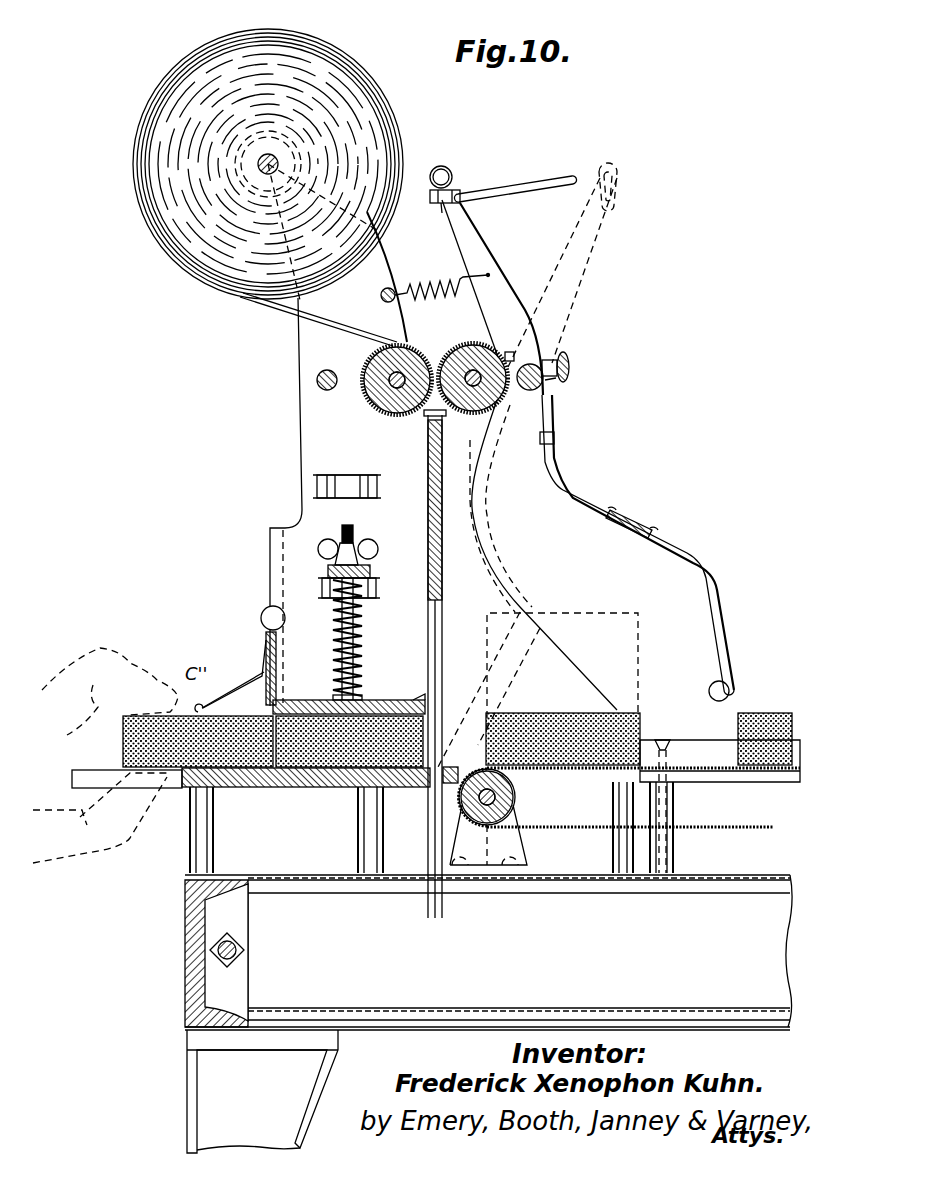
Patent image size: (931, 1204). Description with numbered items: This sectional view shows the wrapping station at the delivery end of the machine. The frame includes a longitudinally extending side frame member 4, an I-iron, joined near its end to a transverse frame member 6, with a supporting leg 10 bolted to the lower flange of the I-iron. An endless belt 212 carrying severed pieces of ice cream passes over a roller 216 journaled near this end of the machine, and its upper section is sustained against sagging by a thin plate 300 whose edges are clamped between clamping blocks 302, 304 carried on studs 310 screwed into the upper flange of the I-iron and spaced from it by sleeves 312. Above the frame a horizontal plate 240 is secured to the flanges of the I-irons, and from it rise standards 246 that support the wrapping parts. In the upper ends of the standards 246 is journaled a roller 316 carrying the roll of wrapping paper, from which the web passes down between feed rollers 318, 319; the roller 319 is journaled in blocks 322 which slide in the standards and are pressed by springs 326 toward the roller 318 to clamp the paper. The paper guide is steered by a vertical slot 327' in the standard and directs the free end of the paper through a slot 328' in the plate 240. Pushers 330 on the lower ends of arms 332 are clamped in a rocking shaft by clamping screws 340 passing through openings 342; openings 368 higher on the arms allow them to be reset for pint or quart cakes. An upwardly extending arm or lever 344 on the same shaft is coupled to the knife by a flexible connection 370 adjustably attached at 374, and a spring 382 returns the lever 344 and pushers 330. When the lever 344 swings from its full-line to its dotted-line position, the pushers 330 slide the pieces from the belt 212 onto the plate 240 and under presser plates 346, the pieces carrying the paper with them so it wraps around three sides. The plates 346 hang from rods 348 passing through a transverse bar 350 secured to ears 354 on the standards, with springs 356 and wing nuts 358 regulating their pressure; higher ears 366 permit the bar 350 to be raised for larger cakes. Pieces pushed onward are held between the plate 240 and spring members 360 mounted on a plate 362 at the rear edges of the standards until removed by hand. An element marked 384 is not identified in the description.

The roller 316 is at (262, 172).
The standard 246 is at (307, 348).
The feed roller 318 is at (381, 402).
The feed roll 319 is at (480, 400).
The roller covering 384 is at (469, 346).
The blocks 322 is at (492, 405).
The springs 326 is at (505, 352).
The clamping screws 340 is at (569, 366).
The openings 342 is at (556, 382).
The arm 344 is at (500, 279).
The flexible connection 370 is at (501, 186).
The adjustable connection 374 is at (449, 186).
The spring 382 is at (421, 286).
The arms 332 is at (505, 598).
The pushers 330 is at (711, 689).
The openings 368 is at (556, 438).
The vertical slot 327' is at (455, 664).
The slot 328' is at (462, 759).
The ears 366 is at (350, 481).
The wing nuts 358 is at (355, 540).
The transverse bar 350 is at (366, 562).
The ears 354 is at (368, 588).
The springs 356 is at (356, 641).
The rods 348 is at (356, 618).
The presser plates 346 is at (407, 708).
The plate 362 is at (261, 623).
The spring members 360 is at (236, 692).
The clamping block 302 is at (706, 748).
The horizontal plate 240 is at (317, 787).
The sleeves 312 is at (675, 812).
The studs 310 is at (660, 745).
The lower clamping block 304 is at (716, 773).
The plate 300 is at (553, 772).
The endless belt 212 is at (565, 832).
The roller 216 is at (460, 800).
The transverse frame member 6 is at (185, 946).
The side frame member 4 is at (387, 1008).
The supporting leg 10 is at (210, 1093).